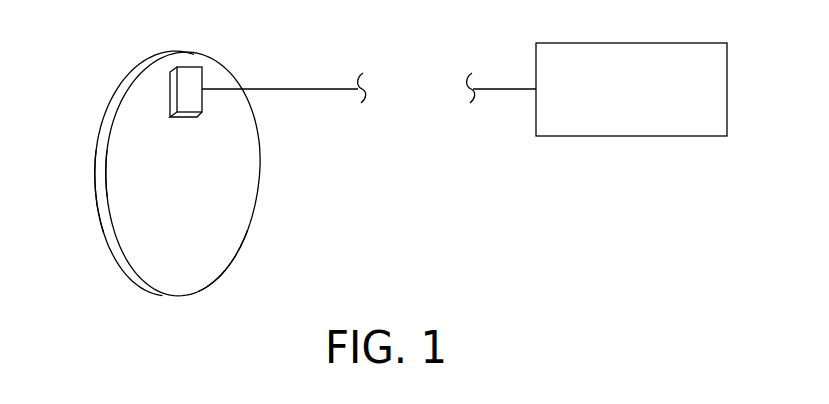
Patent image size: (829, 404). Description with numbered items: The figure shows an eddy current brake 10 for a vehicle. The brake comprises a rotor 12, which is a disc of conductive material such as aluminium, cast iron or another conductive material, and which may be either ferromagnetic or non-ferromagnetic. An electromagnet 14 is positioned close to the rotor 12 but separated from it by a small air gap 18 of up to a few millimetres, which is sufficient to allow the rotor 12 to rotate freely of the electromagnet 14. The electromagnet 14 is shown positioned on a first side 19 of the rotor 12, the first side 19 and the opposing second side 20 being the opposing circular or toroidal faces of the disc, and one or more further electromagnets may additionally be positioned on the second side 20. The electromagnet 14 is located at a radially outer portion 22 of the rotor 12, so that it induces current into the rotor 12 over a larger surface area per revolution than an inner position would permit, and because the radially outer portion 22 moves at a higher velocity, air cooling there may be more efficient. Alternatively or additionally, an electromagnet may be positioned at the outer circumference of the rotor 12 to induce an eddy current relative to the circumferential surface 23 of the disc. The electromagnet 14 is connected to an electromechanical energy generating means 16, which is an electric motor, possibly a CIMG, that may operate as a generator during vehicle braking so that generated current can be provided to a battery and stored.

The eddy current brake 10 is at (377, 187).
The rotor 12 is at (155, 170).
The electromagnet 14 is at (187, 73).
The electromechanical energy generating means 16 is at (630, 137).
The air gap 18 is at (168, 98).
The first side 19 is at (210, 257).
The second side 20 is at (116, 257).
The radially outer portion 22 is at (217, 78).
The circumferential surface 23 is at (107, 210).